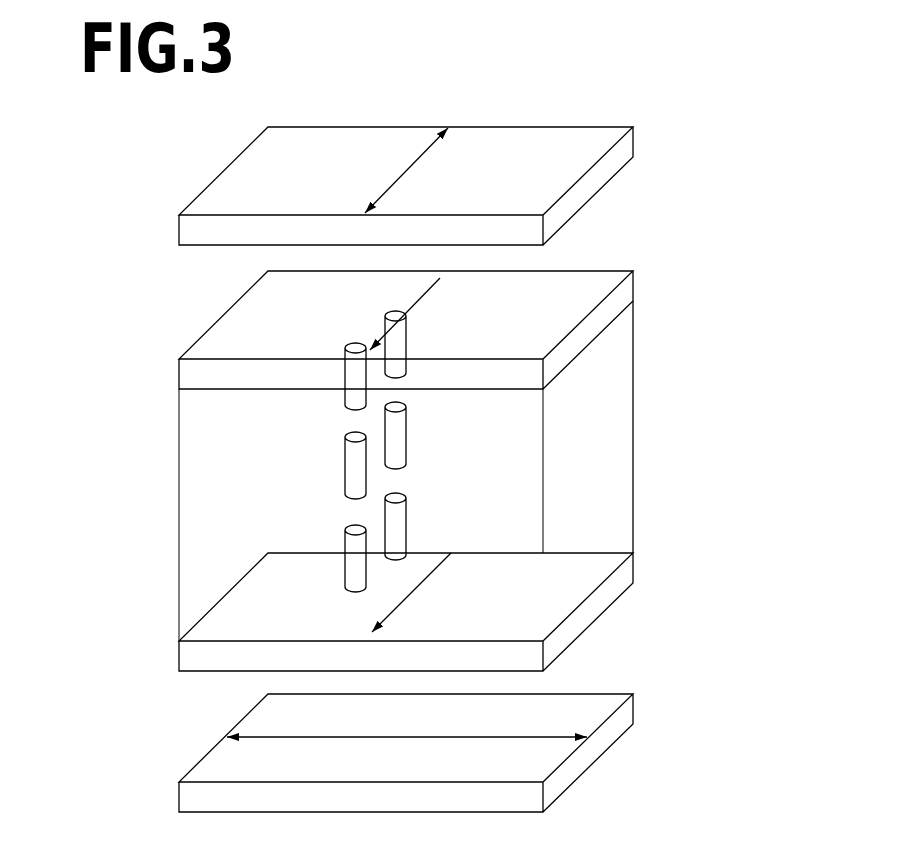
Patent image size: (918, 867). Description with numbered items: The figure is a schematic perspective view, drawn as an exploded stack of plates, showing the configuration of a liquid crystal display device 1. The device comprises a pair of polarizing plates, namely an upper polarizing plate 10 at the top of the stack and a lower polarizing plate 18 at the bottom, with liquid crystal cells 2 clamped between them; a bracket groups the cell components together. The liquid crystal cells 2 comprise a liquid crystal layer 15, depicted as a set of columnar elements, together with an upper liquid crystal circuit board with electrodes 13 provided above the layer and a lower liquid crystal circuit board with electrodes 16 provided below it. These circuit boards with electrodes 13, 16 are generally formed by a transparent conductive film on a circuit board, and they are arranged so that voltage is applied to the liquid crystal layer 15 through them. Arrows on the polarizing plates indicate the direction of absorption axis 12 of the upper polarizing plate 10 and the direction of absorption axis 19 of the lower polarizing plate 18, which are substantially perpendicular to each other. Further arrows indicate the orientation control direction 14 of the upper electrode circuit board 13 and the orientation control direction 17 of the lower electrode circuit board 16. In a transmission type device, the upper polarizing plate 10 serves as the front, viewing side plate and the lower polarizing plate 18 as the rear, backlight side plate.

The liquid crystal display device 1 is at (672, 64).
The liquid crystal cells 2 is at (748, 255).
The upper polarizing plate 10 is at (633, 127).
The direction of absorption axis 12 is at (395, 177).
The upper liquid crystal circuit board with electrodes 13 is at (633, 271).
The orientation control direction 14 is at (425, 303).
The liquid crystal layer 15 is at (398, 438).
The lower liquid crystal circuit board with electrodes 16 is at (623, 574).
The orientation control direction 17 is at (417, 583).
The lower polarizing plate 18 is at (623, 713).
The direction of absorption axis 19 is at (305, 737).